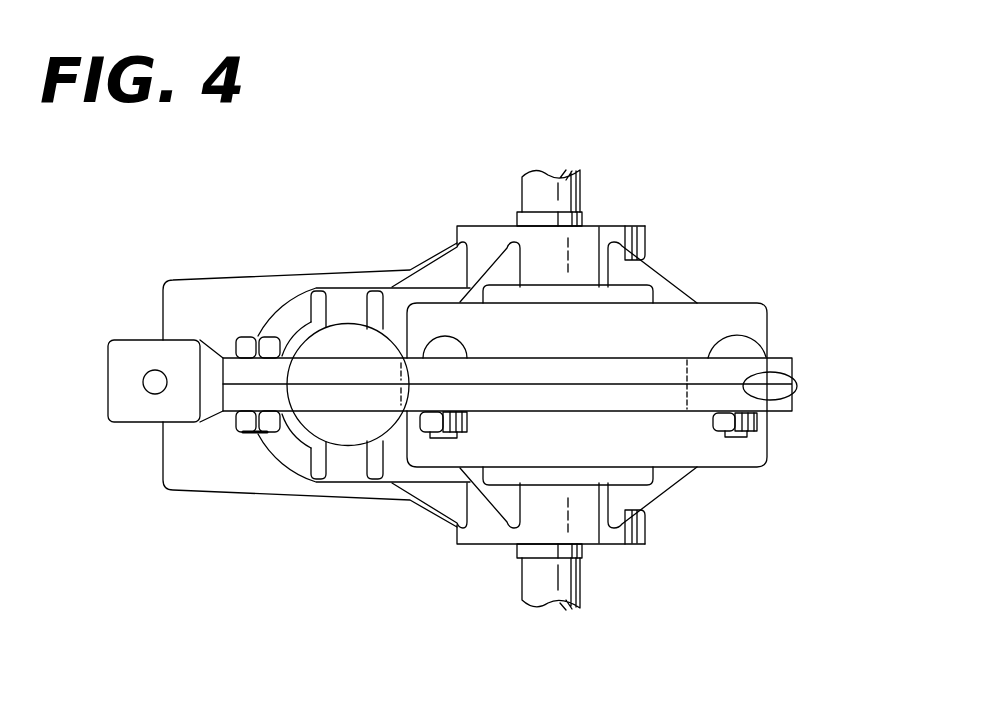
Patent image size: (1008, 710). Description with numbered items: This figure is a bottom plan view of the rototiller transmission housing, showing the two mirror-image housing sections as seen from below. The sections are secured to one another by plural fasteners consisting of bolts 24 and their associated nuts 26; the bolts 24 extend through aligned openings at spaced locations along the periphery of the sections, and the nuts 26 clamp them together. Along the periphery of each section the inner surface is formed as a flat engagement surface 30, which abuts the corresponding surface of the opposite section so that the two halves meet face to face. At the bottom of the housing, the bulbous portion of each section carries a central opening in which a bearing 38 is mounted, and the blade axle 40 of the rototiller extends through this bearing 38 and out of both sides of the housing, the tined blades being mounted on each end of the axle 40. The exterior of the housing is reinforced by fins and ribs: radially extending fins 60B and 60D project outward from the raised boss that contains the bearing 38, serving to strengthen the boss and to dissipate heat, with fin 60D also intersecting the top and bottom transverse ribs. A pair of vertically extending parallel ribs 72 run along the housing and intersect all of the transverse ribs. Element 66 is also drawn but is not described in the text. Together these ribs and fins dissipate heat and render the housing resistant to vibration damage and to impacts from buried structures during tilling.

The bolt 24 is at (250, 336).
The nut 26 is at (247, 430).
The flat engagement surface 30 is at (790, 394).
The bearing 38 is at (585, 214).
The axle 40 is at (522, 177).
The radially extending fin 60B is at (664, 287).
The radially extending fin 60D is at (503, 258).
The bolt 66 is at (642, 228).
The vertically extending parallel rib 72 is at (372, 480).